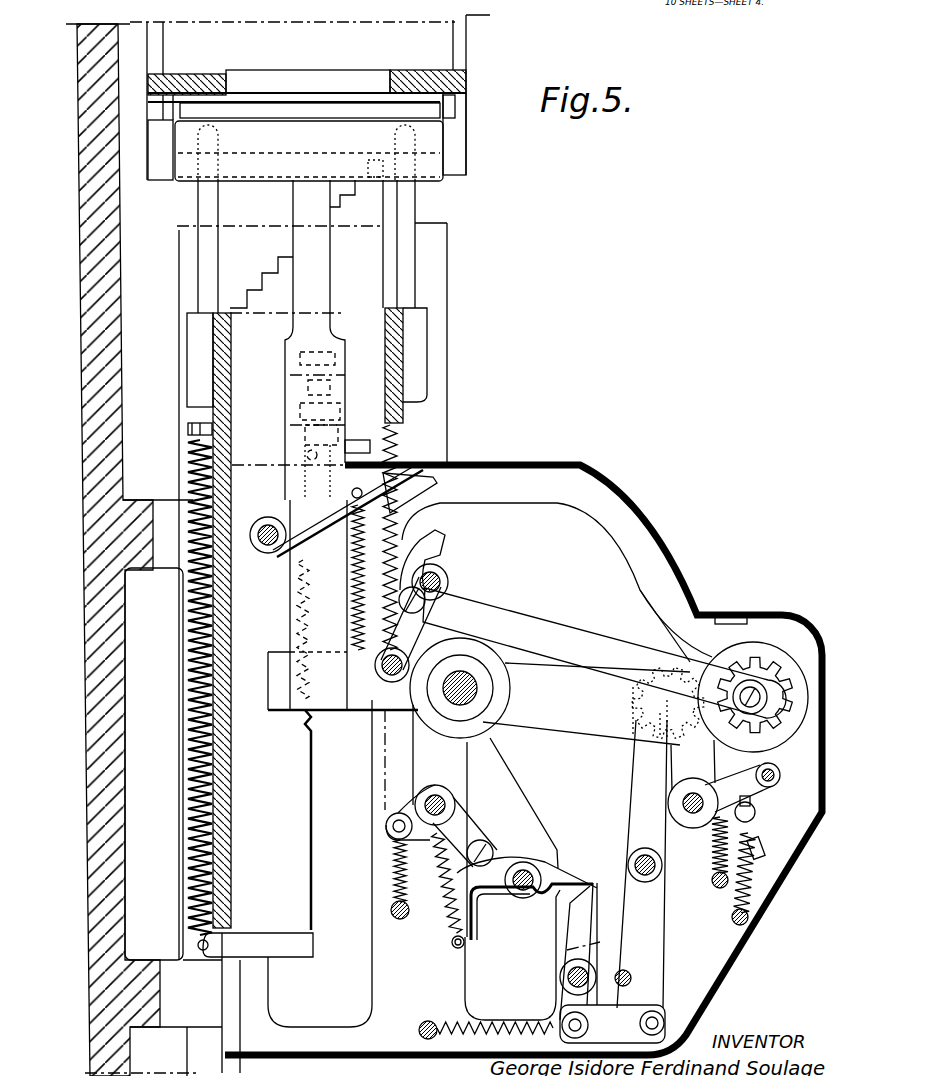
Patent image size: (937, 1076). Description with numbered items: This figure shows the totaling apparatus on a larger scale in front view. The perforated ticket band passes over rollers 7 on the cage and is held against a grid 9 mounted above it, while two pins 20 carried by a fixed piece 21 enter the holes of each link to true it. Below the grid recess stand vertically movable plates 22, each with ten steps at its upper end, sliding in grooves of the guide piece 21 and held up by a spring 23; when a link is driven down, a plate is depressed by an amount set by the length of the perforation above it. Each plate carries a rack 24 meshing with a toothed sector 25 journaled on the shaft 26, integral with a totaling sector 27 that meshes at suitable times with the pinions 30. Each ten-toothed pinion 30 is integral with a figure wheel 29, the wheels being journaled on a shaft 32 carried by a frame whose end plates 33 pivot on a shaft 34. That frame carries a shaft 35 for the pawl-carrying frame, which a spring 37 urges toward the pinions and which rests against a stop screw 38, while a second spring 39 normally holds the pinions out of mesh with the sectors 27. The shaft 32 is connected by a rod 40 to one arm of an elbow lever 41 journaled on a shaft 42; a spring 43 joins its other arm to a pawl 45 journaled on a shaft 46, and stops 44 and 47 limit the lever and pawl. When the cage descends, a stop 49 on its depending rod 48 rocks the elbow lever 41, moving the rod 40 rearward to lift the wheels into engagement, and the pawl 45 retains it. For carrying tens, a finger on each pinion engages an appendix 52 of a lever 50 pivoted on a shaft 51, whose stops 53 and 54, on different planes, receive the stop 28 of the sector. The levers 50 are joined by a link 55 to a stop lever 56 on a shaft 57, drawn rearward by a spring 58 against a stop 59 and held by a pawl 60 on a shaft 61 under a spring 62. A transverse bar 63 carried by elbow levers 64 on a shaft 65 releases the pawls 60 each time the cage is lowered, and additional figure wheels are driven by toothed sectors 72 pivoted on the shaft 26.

The rollers 7 is at (309, 151).
The grid 9 is at (338, 78).
The spindles or pins 20 is at (200, 207).
The fixed piece 21 is at (415, 338).
The vertically movable plates 22 is at (304, 340).
The spring 23 is at (190, 640).
The rack 24 is at (303, 720).
The toothed sector 25 is at (318, 630).
The shaft 26 is at (458, 705).
The toothed sector 27 is at (520, 837).
The stop 28 is at (645, 683).
The figure wheels 29 is at (766, 642).
The pinion 30 is at (785, 675).
The shaft 32 is at (750, 686).
The end plates 33 is at (716, 856).
The shaft 34 is at (691, 815).
The shaft 35 is at (780, 770).
The spring 37 is at (735, 915).
The stop screw 38 is at (757, 808).
The second spring 39 is at (755, 872).
The rod 40 is at (604, 653).
The elbow lever 41 is at (432, 545).
The shaft 42 is at (377, 700).
The spring 43 is at (436, 492).
The stop 44 is at (440, 580).
The pawl 45 is at (416, 476).
The shaft 46 is at (267, 520).
The stop 47 is at (300, 546).
The depending rod 48 is at (290, 390).
The stop 49 is at (360, 438).
The lever 50 is at (642, 864).
The shaft 51 is at (655, 872).
The appendix 52 is at (697, 665).
The stop 53 is at (638, 706).
The stop 54 is at (656, 720).
The link 55 is at (612, 1024).
The stop lever 56 is at (575, 937).
The shaft 57 is at (565, 977).
The spring 58 is at (500, 1022).
The stop 59 is at (622, 970).
The pawl 60 is at (563, 864).
The shaft 61 is at (524, 862).
The spring 62 is at (448, 912).
The transverse bar 63 is at (485, 848).
The elbow levers 64 is at (416, 879).
The shaft 65 is at (448, 802).
The toothed sectors 72 is at (586, 704).